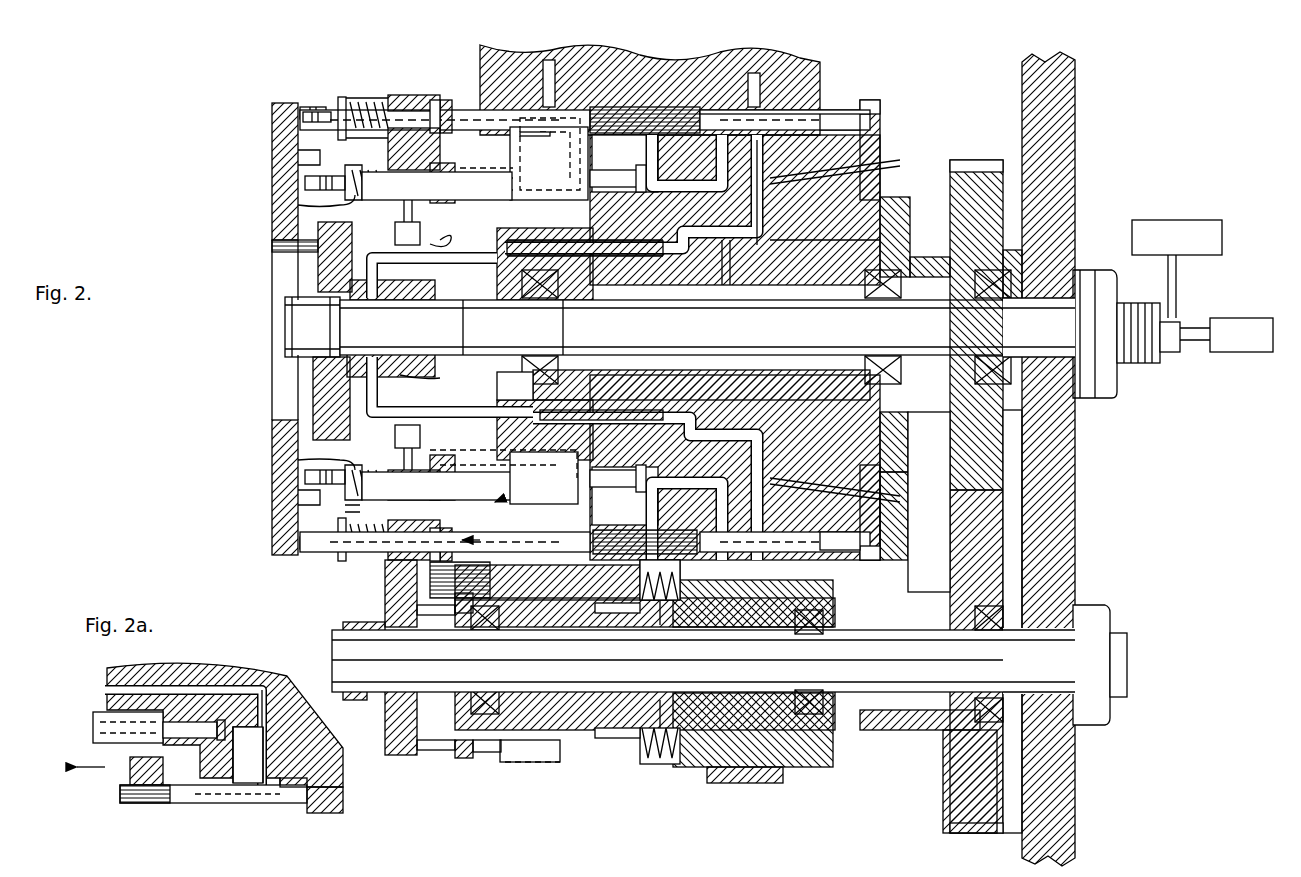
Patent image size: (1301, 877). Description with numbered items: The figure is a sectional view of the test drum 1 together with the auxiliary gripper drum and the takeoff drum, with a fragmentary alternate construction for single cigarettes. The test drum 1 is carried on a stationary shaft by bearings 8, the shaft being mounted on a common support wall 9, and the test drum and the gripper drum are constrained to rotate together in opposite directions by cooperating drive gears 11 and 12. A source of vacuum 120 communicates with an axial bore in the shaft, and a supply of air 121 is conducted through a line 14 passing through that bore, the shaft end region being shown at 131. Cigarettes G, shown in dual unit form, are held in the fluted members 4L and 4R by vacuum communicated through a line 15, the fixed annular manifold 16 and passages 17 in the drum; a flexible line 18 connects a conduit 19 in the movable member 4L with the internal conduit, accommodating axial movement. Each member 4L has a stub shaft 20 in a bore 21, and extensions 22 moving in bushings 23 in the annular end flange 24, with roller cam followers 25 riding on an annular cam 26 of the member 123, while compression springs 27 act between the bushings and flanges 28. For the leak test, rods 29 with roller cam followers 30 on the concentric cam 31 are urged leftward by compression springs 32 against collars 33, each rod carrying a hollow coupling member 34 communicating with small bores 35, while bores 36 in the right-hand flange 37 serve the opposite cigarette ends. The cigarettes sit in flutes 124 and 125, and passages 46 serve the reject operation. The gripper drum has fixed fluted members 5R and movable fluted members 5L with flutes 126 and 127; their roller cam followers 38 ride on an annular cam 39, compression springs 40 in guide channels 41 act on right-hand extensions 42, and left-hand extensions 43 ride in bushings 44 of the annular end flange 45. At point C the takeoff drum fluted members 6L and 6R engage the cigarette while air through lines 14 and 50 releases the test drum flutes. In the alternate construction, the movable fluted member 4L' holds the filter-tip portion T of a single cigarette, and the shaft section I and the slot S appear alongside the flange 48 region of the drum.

In FIG. 2, the test drum 1 is at (880, 172).
In FIG. 2A, the test drum 1 is at (260, 674).
In FIG. 2, the bearings 8 is at (565, 333).
In FIG. 2, the wall 9 is at (1065, 140).
In FIG. 2, the drive gear 11 is at (950, 445).
In FIG. 2, the drive gear 12 is at (950, 563).
In FIG. 2, the line 14 is at (292, 342).
In FIG. 2, the line 15 is at (400, 386).
In FIG. 2, the fixed annular manifold 16 is at (497, 387).
In FIG. 2, the passages 17 is at (727, 420).
In FIG. 2A, the passages 17 is at (107, 692).
In FIG. 2, the flexible line 18 is at (395, 242).
In FIG. 2, the conduit 19 is at (352, 507).
In FIG. 2A, the conduit 19 is at (95, 727).
In FIG. 2, the stub shaft 20 is at (620, 176).
In FIG. 2, the bore 21 is at (640, 195).
In FIG. 2, the extensions 22 is at (456, 172).
In FIG. 2, the bushings 23 is at (388, 165).
In FIG. 2, the annular end flange 24 is at (406, 95).
In FIG. 2, the roller cam followers 25 is at (300, 168).
In FIG. 2, the annular cam 26 is at (305, 183).
In FIG. 2, the compression springs 27 is at (355, 206).
In FIG. 2, the flanges 28 is at (338, 170).
In FIG. 2, the rods 29 is at (383, 95).
In FIG. 2, the roller cam followers 30 is at (312, 108).
In FIG. 2, the annular cam 31 is at (272, 110).
In FIG. 2, the compression springs 32 is at (362, 100).
In FIG. 2, the collars 33 is at (342, 97).
In FIG. 2, the cigarette end coupling member 34 is at (444, 100).
In FIG. 2, the small bores 35 is at (428, 98).
In FIG. 2, the bores 36 is at (878, 120).
In FIG. 2A, the bores 36 is at (343, 800).
In FIG. 2, the flange 37 is at (870, 100).
In FIG. 2A, the flange 37 is at (312, 815).
In FIG. 2, the roller cam followers 38 is at (425, 605).
In FIG. 2, the annular cam 39 is at (390, 592).
In FIG. 2, the compression springs 40 is at (682, 600).
In FIG. 2, the guide channels 41 is at (658, 610).
In FIG. 2, the right-hand extensions 42 is at (618, 610).
In FIG. 2, the left-hand extensions 43 is at (455, 600).
In FIG. 2, the bushings 44 is at (471, 615).
In FIG. 2, the annular end flange 45 is at (483, 755).
In FIG. 2, the passages 46 is at (875, 190).
In FIG. 2A, the passages 46 is at (305, 715).
In FIG. 2, the passage 48 is at (872, 165).
In FIG. 2, the line 50 is at (452, 262).
In FIG. 2, the source of vacuum 120 is at (1170, 220).
In FIG. 2, the supply of air 121 is at (1243, 318).
In FIG. 2, the member 123 is at (272, 245).
In FIG. 2, the flute 124 is at (500, 114).
In FIG. 2, the flute 125 is at (790, 80).
In FIG. 2A, the flute 125 is at (205, 780).
In FIG. 2, the flute 126 is at (575, 610).
In FIG. 2, the flute 127 is at (793, 610).
In FIG. 2, the splined hub 131 is at (285, 316).
In FIG. 2, the left-hand fluted member 4L is at (445, 155).
In FIG. 2, the right-hand fluted member 4R is at (800, 110).
In FIG. 2A, the right-hand fluted member 4R is at (262, 803).
In FIG. 2A, the movable fluted member 4L' is at (132, 743).
In FIG. 2, the movable fluted members 5L is at (550, 592).
In FIG. 2, the fixed fluted members 5R is at (745, 610).
In FIG. 2, the fluted member 6L is at (595, 65).
In FIG. 2, the fluted member 6R is at (700, 70).
In FIG. 2, the cigarettes G is at (645, 60).
In FIG. 2, the point C is at (266, 92).
In FIG. 2, the shaft I is at (692, 342).
In FIG. 2A, the filter-tip portion T is at (148, 803).
In FIG. 2A, the slot S is at (205, 803).